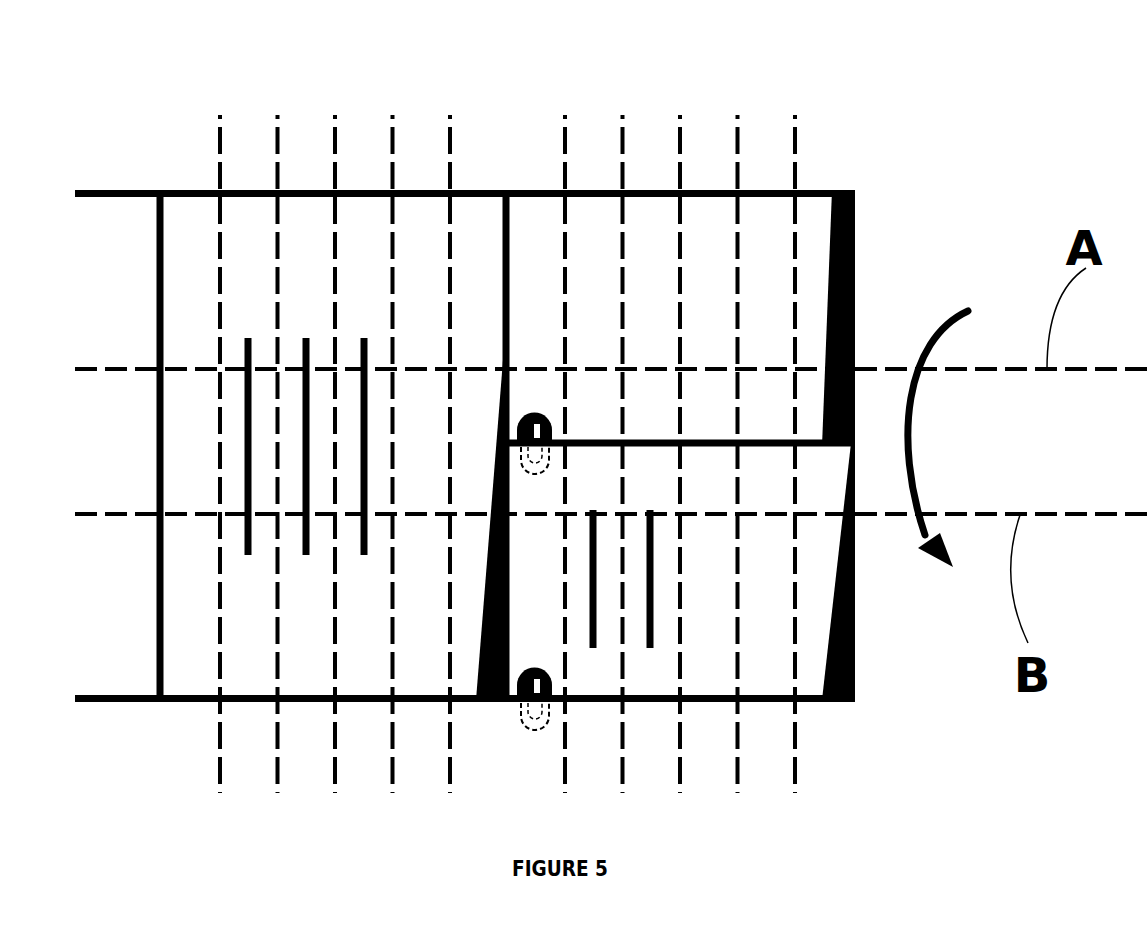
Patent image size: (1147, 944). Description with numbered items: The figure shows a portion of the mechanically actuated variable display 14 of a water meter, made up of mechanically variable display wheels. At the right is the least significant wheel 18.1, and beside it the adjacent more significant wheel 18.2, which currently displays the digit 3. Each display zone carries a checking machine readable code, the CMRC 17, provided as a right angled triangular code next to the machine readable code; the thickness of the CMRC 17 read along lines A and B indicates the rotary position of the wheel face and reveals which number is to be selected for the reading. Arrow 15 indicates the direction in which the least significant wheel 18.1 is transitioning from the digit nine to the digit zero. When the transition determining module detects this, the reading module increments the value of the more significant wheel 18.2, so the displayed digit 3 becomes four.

The variable display 14 is at (896, 154).
The arrow 15 is at (916, 466).
The checking machine readable code 17 is at (853, 700).
The least significant wheel 18.1 is at (710, 208).
The more significant wheel 18.2 is at (305, 700).
The panel 3 is at (192, 642).